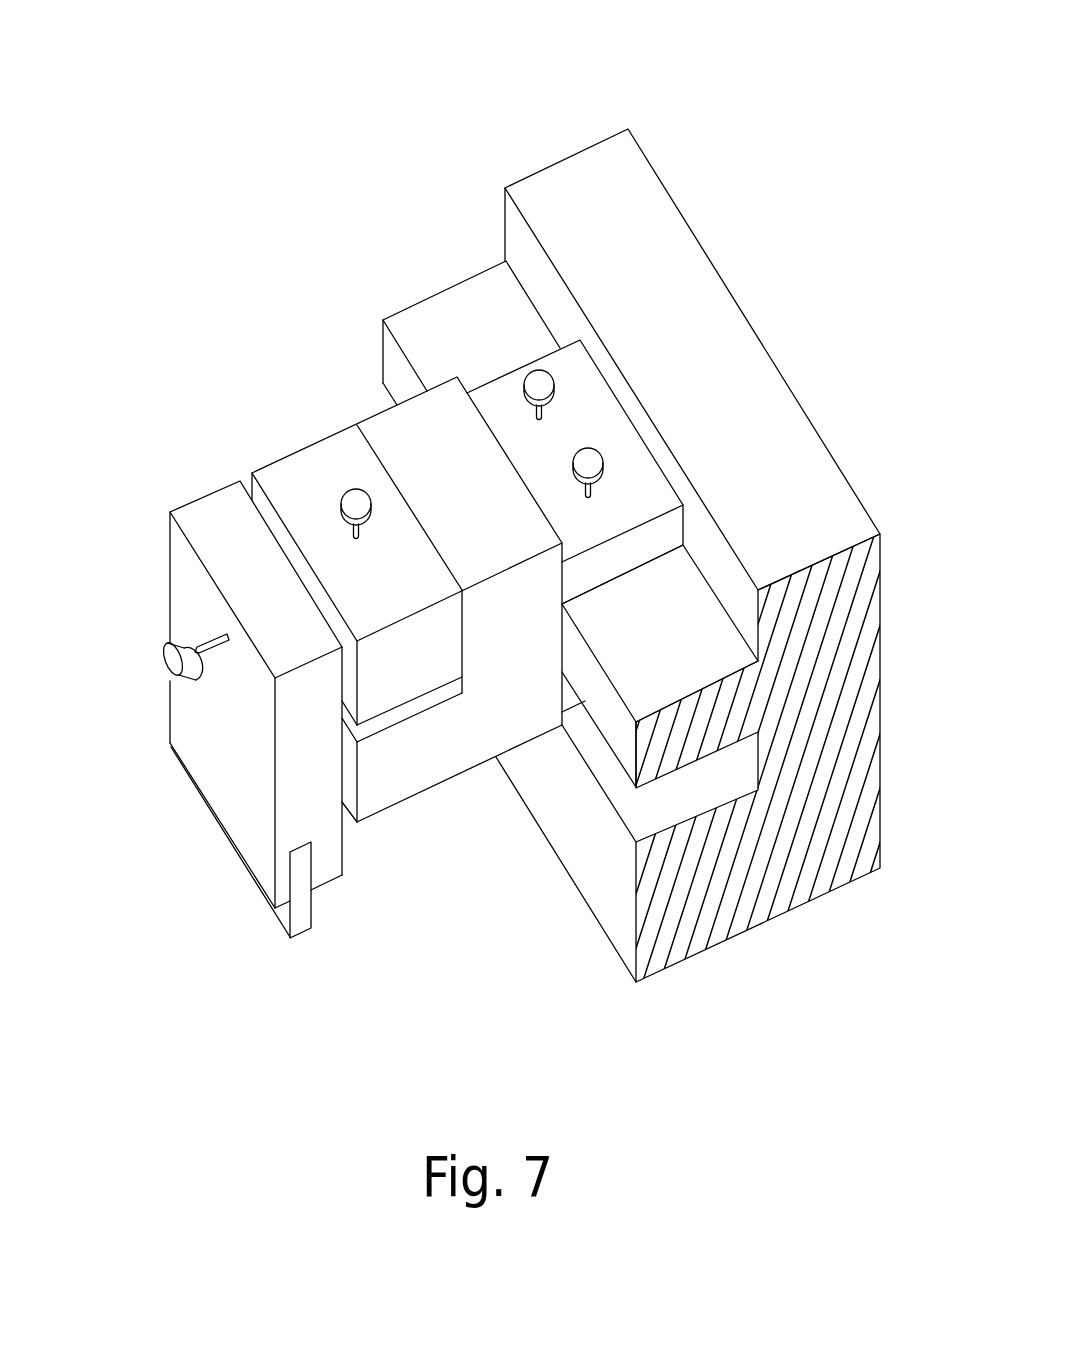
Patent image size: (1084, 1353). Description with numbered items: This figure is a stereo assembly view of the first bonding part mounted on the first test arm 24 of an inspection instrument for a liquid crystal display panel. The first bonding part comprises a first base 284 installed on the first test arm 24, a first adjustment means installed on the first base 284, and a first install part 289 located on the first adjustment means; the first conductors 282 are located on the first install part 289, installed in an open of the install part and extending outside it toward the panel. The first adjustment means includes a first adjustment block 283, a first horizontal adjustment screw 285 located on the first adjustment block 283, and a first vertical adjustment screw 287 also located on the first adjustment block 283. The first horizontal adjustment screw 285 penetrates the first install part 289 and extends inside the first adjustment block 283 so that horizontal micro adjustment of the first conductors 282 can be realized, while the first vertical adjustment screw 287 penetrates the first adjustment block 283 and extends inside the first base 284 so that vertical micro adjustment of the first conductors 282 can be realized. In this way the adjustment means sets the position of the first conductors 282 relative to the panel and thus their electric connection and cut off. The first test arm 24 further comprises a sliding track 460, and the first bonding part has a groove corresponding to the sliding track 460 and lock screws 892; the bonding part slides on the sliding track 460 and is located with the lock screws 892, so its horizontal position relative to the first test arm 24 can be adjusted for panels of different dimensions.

The first test arm 24 is at (695, 327).
The sliding track 460 is at (477, 332).
The lock screw 892 is at (536, 370).
The first vertical adjustment screw 287 is at (357, 494).
The first adjustment block 283 is at (300, 482).
The first base 284 is at (402, 758).
The first install part 289 is at (239, 757).
The first conductor 282 is at (298, 920).
The first horizontal adjustment screw 285 is at (170, 660).